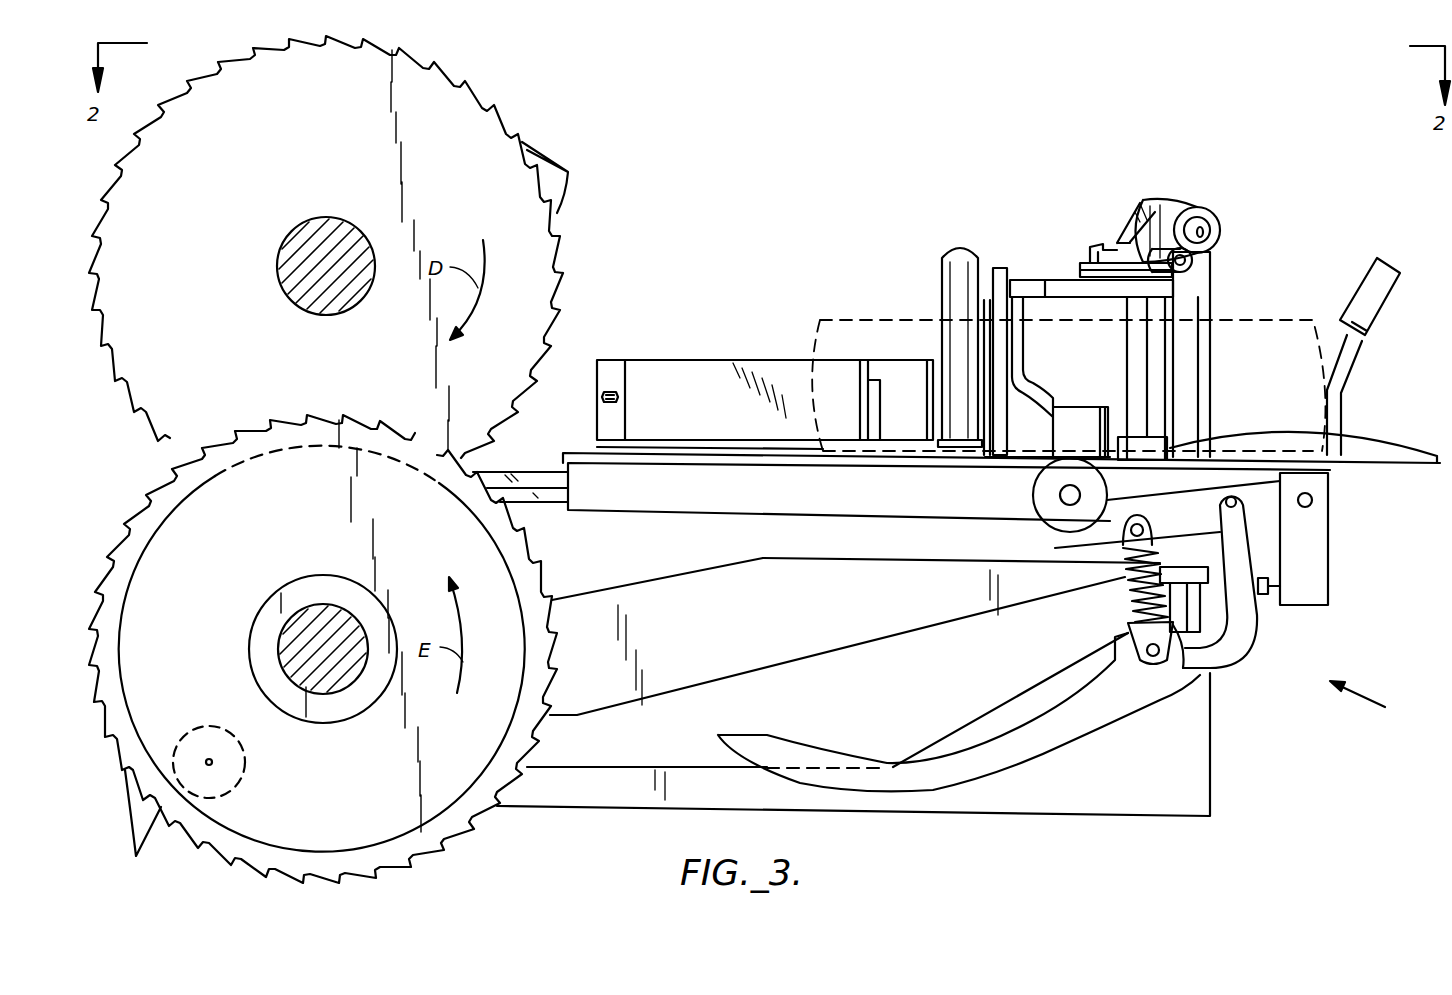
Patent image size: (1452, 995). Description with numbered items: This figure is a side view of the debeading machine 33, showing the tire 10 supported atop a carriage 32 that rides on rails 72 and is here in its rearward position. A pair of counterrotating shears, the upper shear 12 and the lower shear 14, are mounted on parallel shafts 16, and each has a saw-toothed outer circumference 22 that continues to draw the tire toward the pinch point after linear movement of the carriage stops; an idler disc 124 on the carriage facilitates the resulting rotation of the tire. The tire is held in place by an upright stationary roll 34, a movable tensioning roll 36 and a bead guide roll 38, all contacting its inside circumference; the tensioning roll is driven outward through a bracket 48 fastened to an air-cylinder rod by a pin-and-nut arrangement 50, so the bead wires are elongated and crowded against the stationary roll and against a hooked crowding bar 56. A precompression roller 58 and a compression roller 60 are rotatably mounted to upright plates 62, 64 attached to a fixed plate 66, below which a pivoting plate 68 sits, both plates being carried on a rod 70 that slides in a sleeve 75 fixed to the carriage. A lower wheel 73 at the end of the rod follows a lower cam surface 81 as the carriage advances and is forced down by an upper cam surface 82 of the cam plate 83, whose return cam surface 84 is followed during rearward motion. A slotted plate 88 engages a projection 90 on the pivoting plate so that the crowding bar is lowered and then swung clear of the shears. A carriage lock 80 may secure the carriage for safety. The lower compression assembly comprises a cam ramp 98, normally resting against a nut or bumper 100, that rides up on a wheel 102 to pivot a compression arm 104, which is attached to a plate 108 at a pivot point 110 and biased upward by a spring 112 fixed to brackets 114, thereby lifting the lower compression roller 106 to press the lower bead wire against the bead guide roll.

The tire 10 is at (851, 320).
The upper shear 12 is at (488, 103).
The lower shear 14 is at (419, 804).
The parallel shafts 16 is at (318, 303).
The saw-toothed outer circumference 22 is at (570, 173).
The carriage 32 is at (752, 507).
The debeading machine 33 is at (1372, 704).
The upright stationary roll 34 is at (1193, 302).
The movable tensioning roll 36 is at (957, 288).
The bead guide roll 38 is at (1047, 445).
The bracket 48 is at (720, 372).
The pin-and-nut arrangement 50 is at (602, 398).
The hooked crowding bar 56 is at (1033, 378).
The precompression roller 58 is at (1210, 207).
The compression roller 60 is at (1195, 258).
The upright plate 62 is at (1153, 198).
The upright plate 64 is at (1146, 200).
The fixed plate 66 is at (1103, 245).
The pivoting plate 68 is at (1060, 282).
The rod 70 is at (1150, 383).
The rails 72 is at (530, 477).
The lower wheel 73 is at (1120, 606).
The sleeve 75 is at (1167, 440).
The carriage lock 80 is at (1363, 310).
The lower cam surface 81 is at (1016, 694).
The upper cam surface 82 is at (805, 656).
The cam plate 83 is at (705, 652).
The return cam surface 84 is at (713, 568).
The slotted plate 88 is at (1000, 352).
The projection 90 is at (993, 268).
The cam ramp 98 is at (1113, 722).
The nut or bumper 100 is at (1266, 595).
The wheel 102 is at (245, 752).
The compression arm 104 is at (1263, 512).
The lower compression roller 106 is at (1048, 518).
The plate 108 is at (1313, 585).
The pivot point 110 is at (1312, 500).
The spring 112 is at (1157, 540).
The brackets 114 is at (1117, 542).
The idler disc 124 is at (1363, 440).